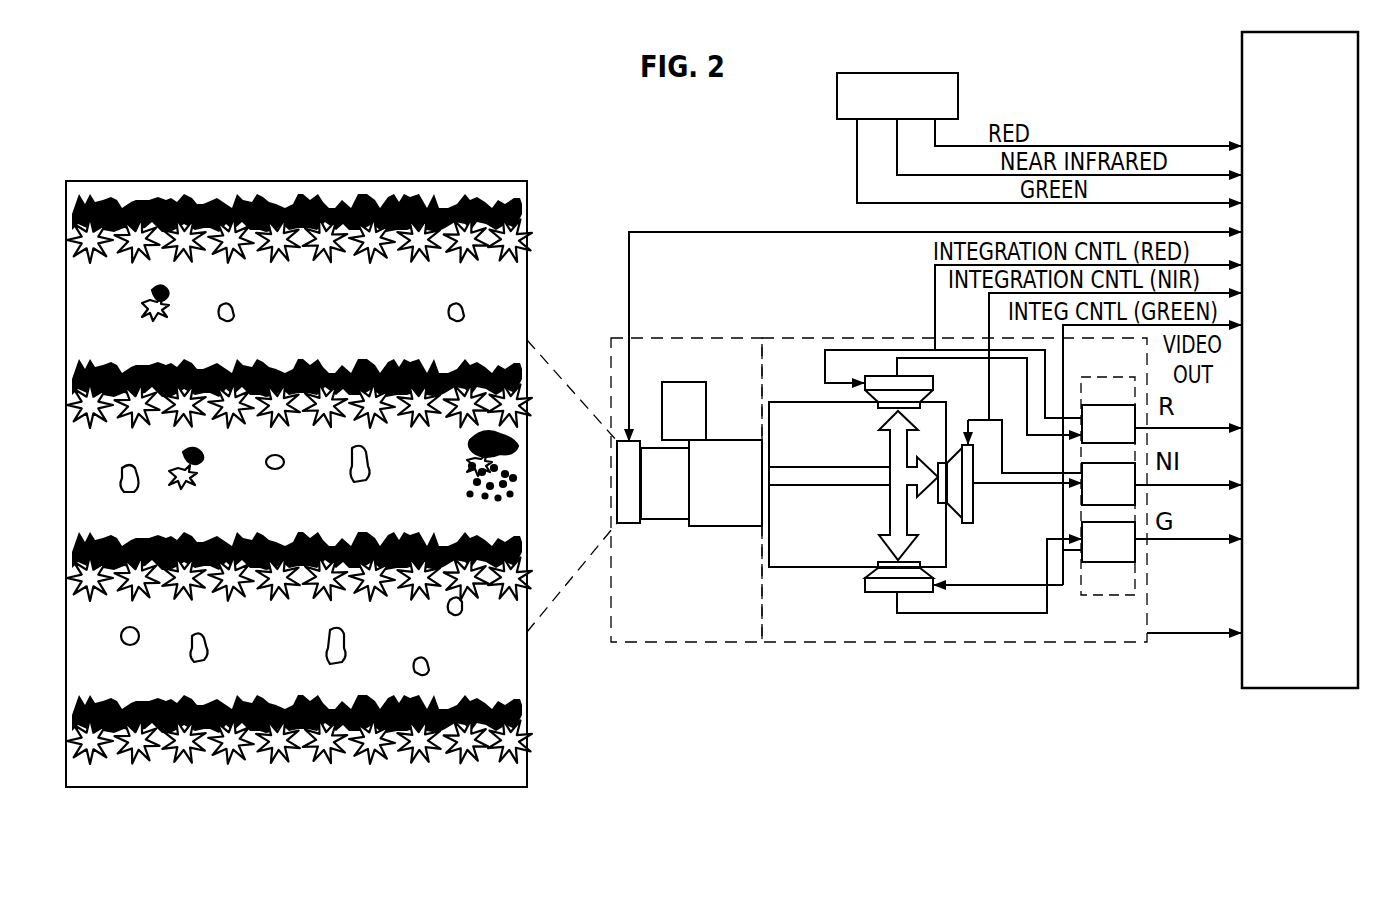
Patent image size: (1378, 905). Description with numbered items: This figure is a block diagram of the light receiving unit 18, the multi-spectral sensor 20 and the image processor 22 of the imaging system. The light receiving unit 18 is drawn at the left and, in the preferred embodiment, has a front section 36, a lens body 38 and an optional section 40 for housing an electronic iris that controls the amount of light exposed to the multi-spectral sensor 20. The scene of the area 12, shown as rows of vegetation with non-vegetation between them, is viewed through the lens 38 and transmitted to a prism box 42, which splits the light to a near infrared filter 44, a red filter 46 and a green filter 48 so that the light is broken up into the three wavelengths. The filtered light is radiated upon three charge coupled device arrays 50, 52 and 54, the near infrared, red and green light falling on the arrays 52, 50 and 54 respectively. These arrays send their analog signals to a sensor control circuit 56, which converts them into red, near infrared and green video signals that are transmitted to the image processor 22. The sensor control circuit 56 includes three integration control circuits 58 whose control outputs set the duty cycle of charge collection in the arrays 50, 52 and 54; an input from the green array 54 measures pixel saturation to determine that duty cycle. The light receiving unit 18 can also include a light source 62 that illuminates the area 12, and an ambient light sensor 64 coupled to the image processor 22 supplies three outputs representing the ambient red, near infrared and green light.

The area 12 is at (447, 183).
The light receiving unit 18 is at (733, 643).
The multi-spectral sensor 20 is at (957, 518).
The image processor 22 is at (1268, 32).
The front section 36 is at (743, 527).
The lens body 38 is at (663, 519).
The optional section 40 is at (635, 440).
The prism box 42 is at (800, 402).
The near infrared filter 44 is at (943, 505).
The red filter 46 is at (877, 404).
The green filter 48 is at (878, 555).
The charge coupled device (CCD) array 50 is at (882, 376).
The charge coupled device (CCD) array 52 is at (962, 440).
The charge coupled device (CCD) array 54 is at (873, 593).
The sensor control circuit 56 is at (1107, 596).
The integration control circuit 58 is at (1123, 415).
The light source 62 is at (680, 382).
The ambient light sensor 64 is at (882, 73).